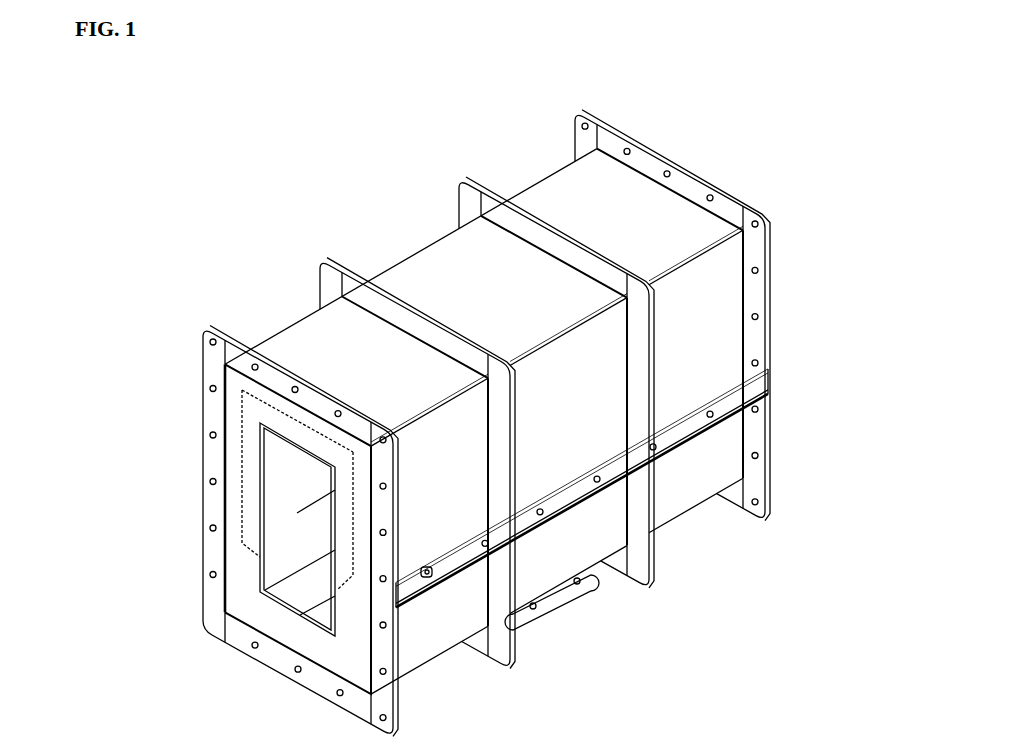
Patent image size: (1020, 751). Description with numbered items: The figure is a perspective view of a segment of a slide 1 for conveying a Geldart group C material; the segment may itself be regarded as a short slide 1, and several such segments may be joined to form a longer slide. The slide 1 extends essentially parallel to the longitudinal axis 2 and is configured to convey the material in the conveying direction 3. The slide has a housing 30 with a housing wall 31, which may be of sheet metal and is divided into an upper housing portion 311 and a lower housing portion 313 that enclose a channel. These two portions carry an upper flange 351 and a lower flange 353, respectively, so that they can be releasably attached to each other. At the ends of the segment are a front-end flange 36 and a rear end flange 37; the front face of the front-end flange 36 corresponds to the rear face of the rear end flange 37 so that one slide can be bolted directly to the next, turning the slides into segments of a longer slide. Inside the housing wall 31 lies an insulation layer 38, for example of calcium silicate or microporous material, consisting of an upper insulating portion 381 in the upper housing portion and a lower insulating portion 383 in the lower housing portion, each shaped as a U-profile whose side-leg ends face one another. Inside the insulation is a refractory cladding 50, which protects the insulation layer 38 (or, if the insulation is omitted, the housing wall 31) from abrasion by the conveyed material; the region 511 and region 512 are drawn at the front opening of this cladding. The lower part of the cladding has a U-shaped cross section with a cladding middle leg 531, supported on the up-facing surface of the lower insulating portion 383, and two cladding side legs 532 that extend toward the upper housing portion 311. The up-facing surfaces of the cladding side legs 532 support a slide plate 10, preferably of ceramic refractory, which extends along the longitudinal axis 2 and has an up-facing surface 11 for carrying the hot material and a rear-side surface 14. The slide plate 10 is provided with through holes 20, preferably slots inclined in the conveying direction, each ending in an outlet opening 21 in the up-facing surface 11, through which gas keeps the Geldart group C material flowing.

The slide 1 is at (464, 418).
The longitudinal axis 2 is at (216, 609).
The conveying direction 3 is at (200, 620).
The slide plate 10 is at (223, 451).
The up-facing surface 11 is at (213, 404).
The rear-side surface 14 is at (223, 451).
The through holes 20 is at (581, 594).
The outlet opening 21 is at (427, 573).
The housing 30 is at (476, 421).
The housing wall 31 is at (600, 575).
The upper housing portion 311 is at (597, 190).
The lower housing portion 313 is at (677, 514).
The front-end flange 36 is at (708, 183).
The rear end flange 37 is at (353, 490).
The insulation layer 38 is at (355, 532).
The upper insulating portion 381 is at (355, 531).
The lower insulating portion 383 is at (361, 679).
The upper flange 351 is at (621, 476).
The lower flange 353 is at (740, 410).
The refractory cladding 50 is at (217, 451).
The window 511 is at (230, 451).
The plate margin 512 is at (208, 451).
The cladding middle leg 531 is at (293, 623).
The cladding side legs 532 is at (250, 572).